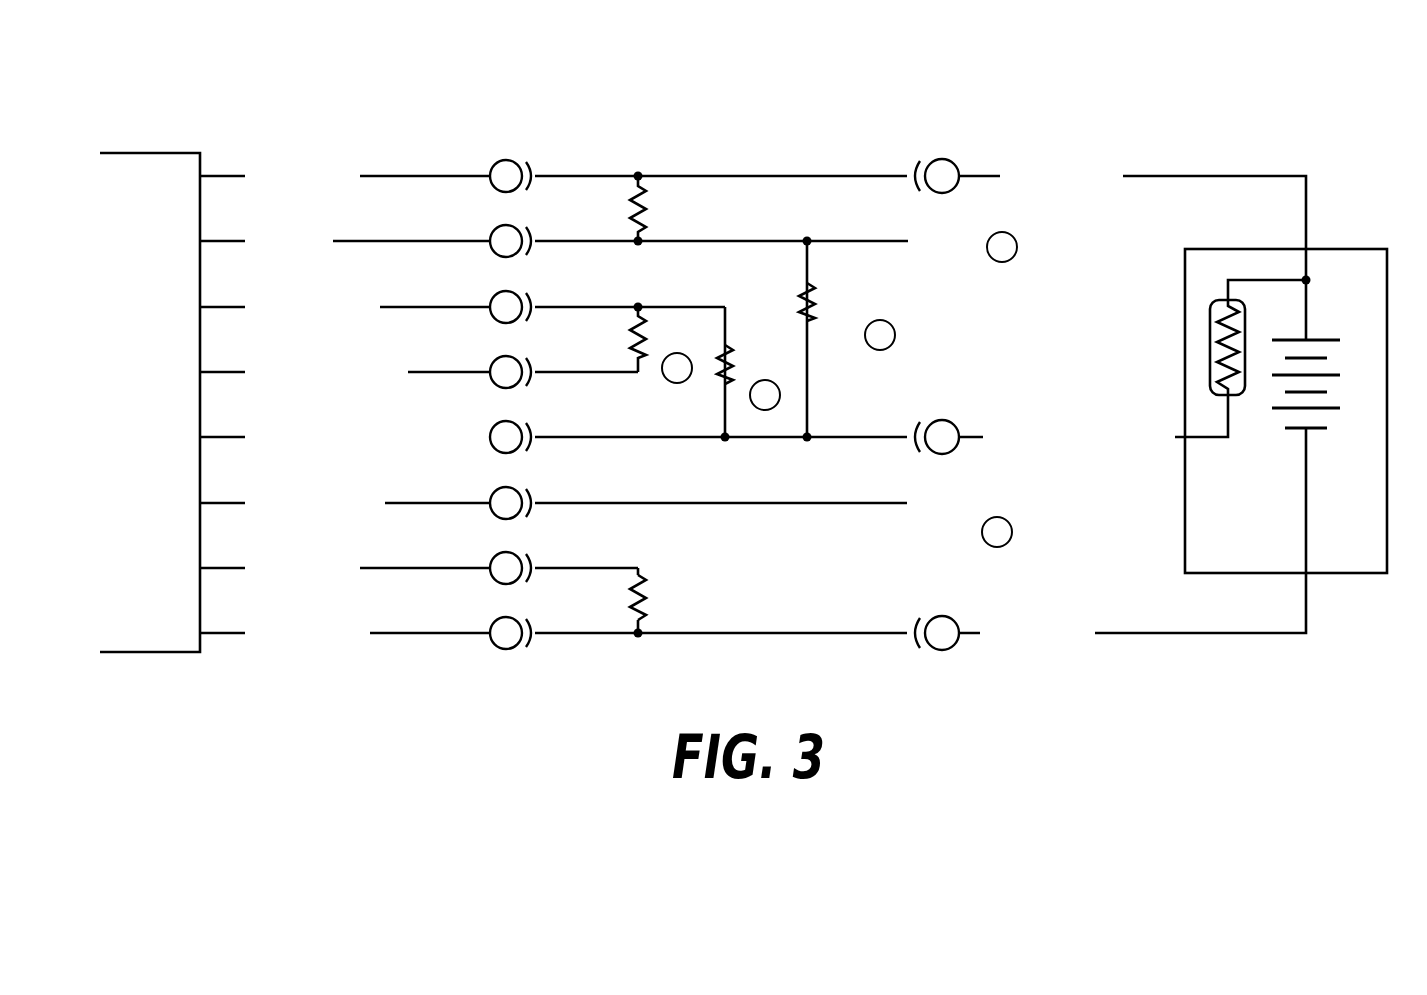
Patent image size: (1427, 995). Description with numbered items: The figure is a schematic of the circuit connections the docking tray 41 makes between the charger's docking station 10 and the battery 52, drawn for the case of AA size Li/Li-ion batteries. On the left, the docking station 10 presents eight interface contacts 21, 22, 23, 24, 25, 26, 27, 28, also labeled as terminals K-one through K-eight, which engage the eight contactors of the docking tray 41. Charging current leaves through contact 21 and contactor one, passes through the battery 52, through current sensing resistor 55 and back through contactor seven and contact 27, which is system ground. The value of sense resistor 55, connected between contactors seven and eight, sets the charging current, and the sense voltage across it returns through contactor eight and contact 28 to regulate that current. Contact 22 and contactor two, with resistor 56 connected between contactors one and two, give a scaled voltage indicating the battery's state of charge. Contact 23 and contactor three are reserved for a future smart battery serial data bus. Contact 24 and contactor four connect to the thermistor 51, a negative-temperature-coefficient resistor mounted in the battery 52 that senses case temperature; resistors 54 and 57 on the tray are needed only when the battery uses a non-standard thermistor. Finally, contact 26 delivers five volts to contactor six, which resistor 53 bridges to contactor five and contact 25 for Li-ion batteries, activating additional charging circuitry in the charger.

The docking station 10 is at (512, 101).
The docking tray 41 is at (924, 101).
The battery 52 is at (1397, 105).
The interface contact 21 is at (491, 624).
The interface contact 22 is at (491, 559).
The interface contact 23 is at (491, 494).
The interface contact 24 is at (490, 428).
The interface contact 25 is at (491, 363).
The interface contact 26 is at (491, 298).
The interface contact 27 is at (491, 232).
The interface contact 28 is at (491, 167).
The thermistor 51 is at (1210, 346).
The resistor 53 is at (643, 322).
The resistor 54 is at (731, 348).
The current sensing resistor 55 is at (648, 207).
The resistor 56 is at (648, 582).
The resistor 57 is at (811, 290).